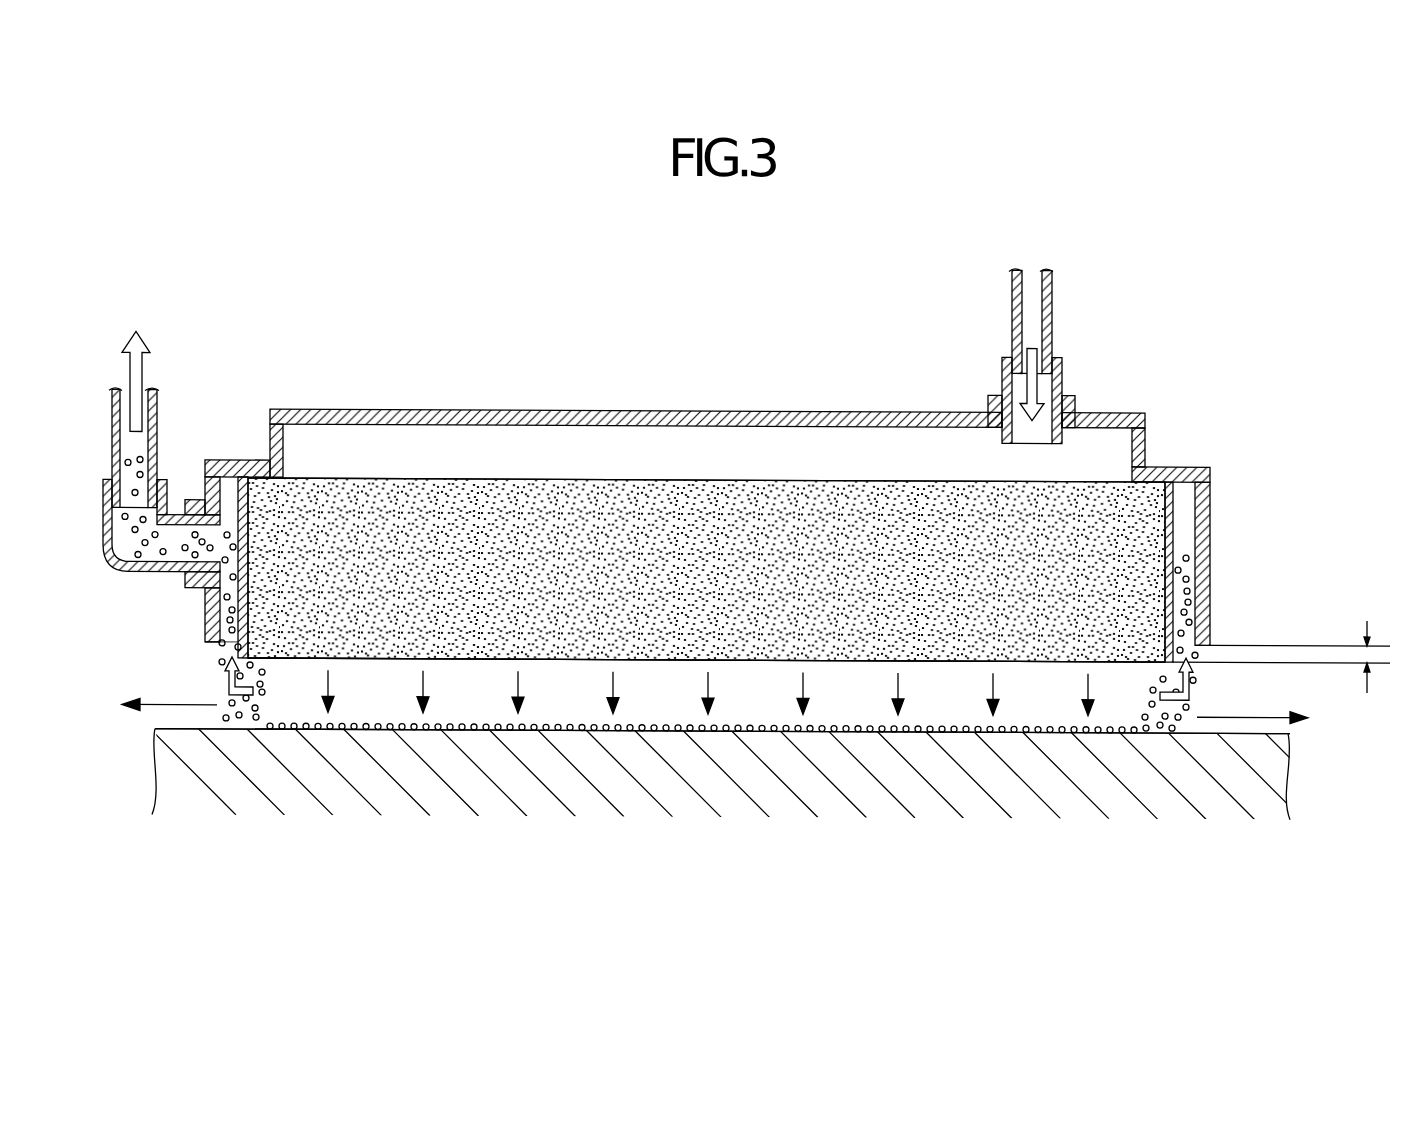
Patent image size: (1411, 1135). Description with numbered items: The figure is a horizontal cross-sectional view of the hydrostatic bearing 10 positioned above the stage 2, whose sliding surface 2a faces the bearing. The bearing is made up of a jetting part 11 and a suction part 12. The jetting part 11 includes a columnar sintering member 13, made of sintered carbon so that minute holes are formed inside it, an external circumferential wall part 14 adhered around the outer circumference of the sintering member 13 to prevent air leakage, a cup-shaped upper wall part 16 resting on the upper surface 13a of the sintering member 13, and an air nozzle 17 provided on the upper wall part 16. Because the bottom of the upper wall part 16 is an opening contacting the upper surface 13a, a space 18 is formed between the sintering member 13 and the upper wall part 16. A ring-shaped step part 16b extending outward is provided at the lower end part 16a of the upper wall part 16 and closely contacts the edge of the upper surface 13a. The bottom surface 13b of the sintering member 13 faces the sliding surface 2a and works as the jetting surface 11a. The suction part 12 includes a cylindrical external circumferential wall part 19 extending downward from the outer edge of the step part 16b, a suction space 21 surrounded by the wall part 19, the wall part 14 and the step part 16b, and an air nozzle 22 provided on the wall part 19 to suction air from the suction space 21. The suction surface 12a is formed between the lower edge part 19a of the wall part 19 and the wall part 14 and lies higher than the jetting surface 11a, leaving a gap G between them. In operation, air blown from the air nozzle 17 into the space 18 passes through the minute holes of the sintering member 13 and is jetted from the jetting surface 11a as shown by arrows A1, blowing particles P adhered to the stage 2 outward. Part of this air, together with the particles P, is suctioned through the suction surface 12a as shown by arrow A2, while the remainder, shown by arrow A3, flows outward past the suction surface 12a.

The hydrostatic bearing 10 is at (259, 234).
The suction part 12 is at (1213, 479).
The suction surface 12a is at (232, 652).
The upper wall part 16 is at (860, 409).
The lower end part 16a is at (1138, 468).
The step part 16b is at (1170, 473).
The space 18 is at (763, 458).
The external circumferential wall part 19 is at (1205, 562).
The lower edge part 19a is at (210, 643).
The external circumferential wall part 14 is at (1172, 510).
The suction space 21 is at (1190, 596).
The sintering member 13 is at (665, 520).
The upper surface 13a is at (418, 477).
The bottom surface 13b is at (706, 660).
The jetting surface 11a is at (650, 660).
The jetting part 11 is at (940, 672).
The air nozzle 17 is at (1050, 313).
The air nozzle 22 is at (116, 428).
The stage 2 is at (1282, 768).
The sliding surface 2a is at (170, 716).
The particles P is at (387, 731).
The arrows indicating jetted air A1 is at (808, 686).
The arrow indicating suctioned air A2 is at (241, 678).
The arrow indicating outward air flow A3 is at (160, 702).
The gap G is at (1382, 652).